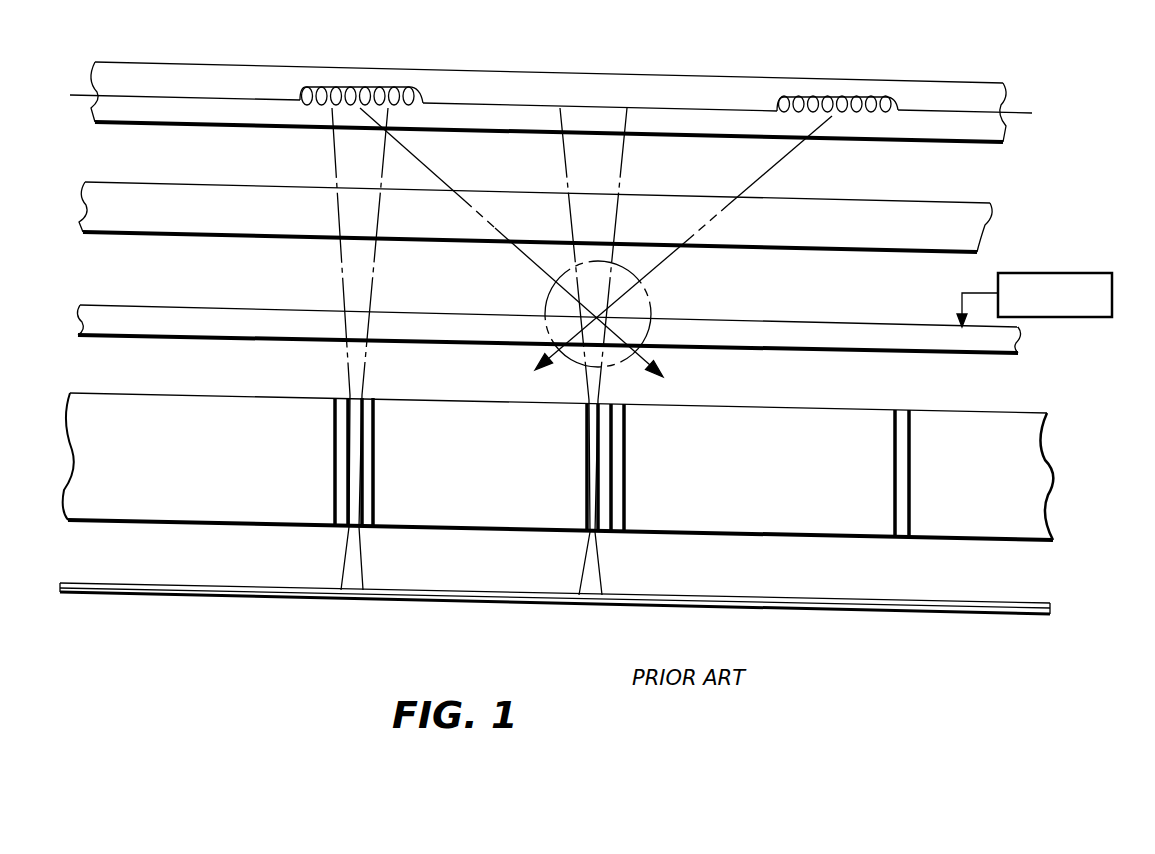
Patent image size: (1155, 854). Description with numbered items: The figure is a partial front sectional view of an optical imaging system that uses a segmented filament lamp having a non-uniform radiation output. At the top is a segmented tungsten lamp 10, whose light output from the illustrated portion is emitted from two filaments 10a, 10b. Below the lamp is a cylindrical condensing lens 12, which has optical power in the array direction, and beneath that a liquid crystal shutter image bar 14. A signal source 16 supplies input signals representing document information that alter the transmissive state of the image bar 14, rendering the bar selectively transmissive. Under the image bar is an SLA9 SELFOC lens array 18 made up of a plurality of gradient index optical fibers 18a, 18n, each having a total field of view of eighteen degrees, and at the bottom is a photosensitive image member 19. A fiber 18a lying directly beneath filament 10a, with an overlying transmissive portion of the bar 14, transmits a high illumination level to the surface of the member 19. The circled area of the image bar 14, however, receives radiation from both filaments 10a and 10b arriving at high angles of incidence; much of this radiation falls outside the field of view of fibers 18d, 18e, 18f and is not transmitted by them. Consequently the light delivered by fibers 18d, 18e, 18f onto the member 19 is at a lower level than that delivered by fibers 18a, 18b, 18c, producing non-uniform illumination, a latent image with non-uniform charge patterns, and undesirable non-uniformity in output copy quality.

The segmented tungsten lamp 10 is at (657, 90).
The filament 10a is at (390, 87).
The filament 10b is at (852, 98).
The cylindrical condensing lens 12 is at (990, 205).
The liquid crystal shutter image bar 14 is at (828, 322).
The signal source 16 is at (1092, 273).
The SELFOC lens array 18 is at (1040, 495).
The gradient index optical fiber 18a is at (353, 425).
The gradient index optical fiber 18b is at (367, 418).
The gradient index optical fiber 18c is at (337, 455).
The gradient index optical fiber 18d is at (607, 435).
The gradient index optical fiber 18e is at (592, 502).
The gradient index optical fiber 18f is at (620, 430).
The gradient index optical fiber 18n is at (912, 437).
The photosensitive image member 19 is at (1033, 615).